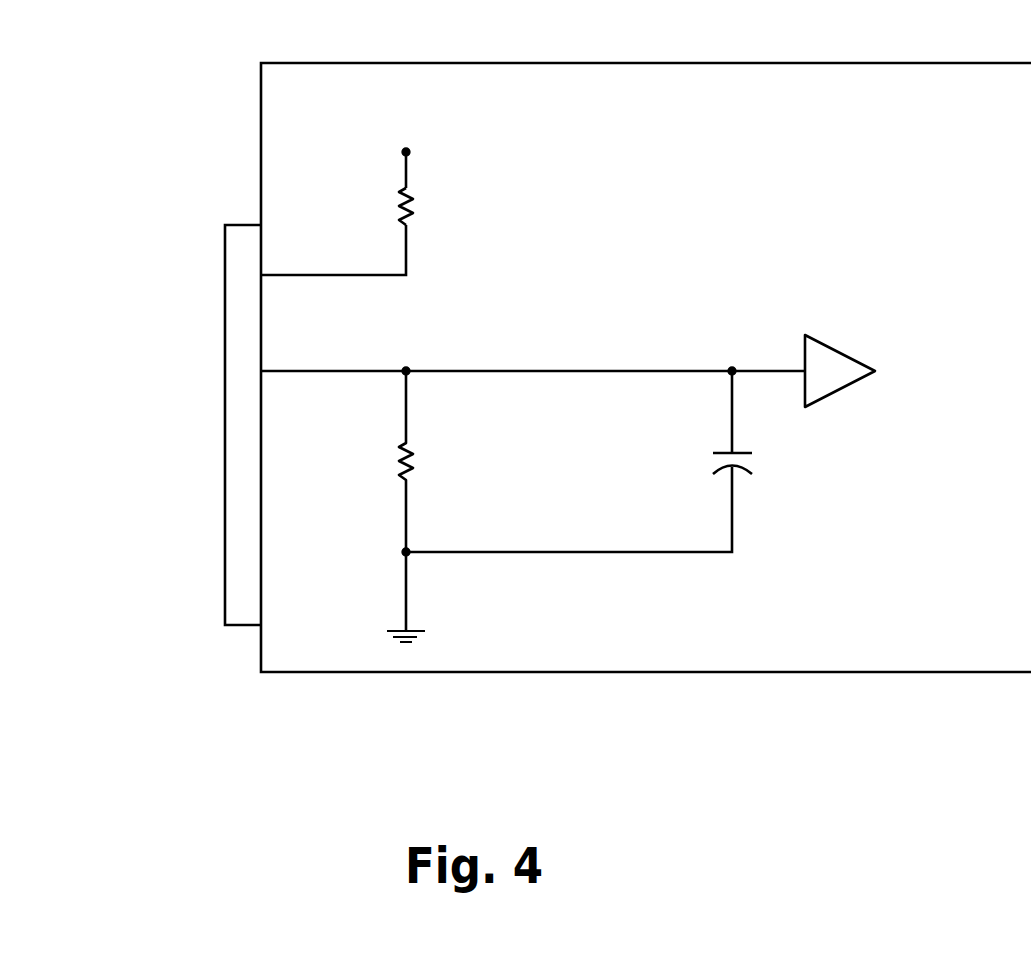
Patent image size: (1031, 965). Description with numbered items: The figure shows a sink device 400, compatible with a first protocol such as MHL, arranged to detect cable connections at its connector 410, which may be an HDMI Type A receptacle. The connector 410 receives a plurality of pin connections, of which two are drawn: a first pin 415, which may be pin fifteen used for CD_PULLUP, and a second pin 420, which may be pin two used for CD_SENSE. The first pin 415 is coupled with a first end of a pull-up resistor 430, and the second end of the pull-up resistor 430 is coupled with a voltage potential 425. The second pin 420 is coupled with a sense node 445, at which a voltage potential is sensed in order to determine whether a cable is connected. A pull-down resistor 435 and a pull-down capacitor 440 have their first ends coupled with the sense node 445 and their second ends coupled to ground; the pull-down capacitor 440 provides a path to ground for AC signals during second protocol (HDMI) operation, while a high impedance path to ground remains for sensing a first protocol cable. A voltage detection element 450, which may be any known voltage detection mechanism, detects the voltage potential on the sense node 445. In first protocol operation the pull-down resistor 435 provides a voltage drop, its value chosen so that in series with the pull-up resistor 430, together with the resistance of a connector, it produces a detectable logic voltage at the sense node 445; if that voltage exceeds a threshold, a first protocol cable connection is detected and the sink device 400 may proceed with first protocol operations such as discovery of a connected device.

The sink device 400 is at (935, 147).
The connector 410 is at (245, 223).
The first pin 415 is at (239, 263).
The second pin 420 is at (246, 397).
The voltage potential 425 is at (464, 139).
The pull-up resistor 430 is at (508, 219).
The pull-down resistor 435 is at (532, 506).
The pull-down capacitor 440 is at (707, 461).
The sense node 445 is at (603, 343).
The voltage detection element 450 is at (879, 322).